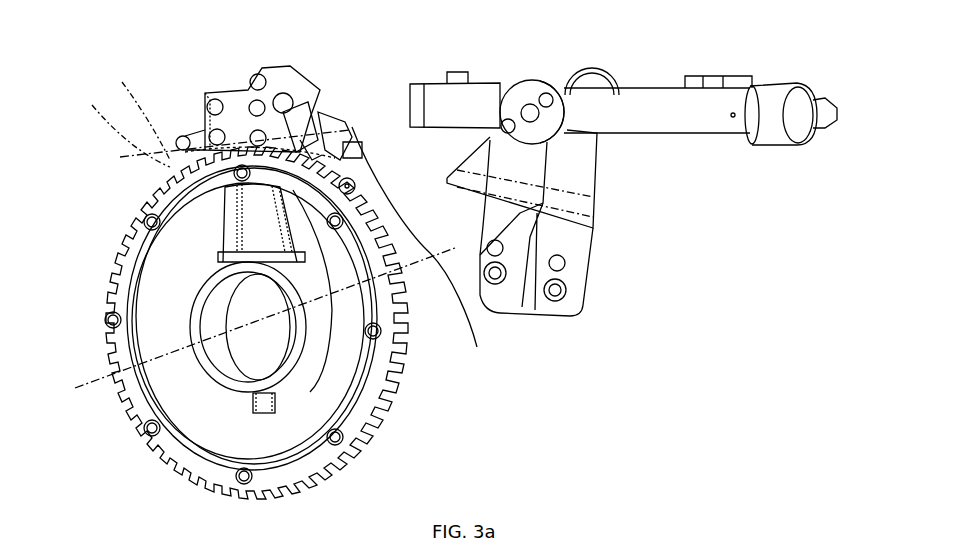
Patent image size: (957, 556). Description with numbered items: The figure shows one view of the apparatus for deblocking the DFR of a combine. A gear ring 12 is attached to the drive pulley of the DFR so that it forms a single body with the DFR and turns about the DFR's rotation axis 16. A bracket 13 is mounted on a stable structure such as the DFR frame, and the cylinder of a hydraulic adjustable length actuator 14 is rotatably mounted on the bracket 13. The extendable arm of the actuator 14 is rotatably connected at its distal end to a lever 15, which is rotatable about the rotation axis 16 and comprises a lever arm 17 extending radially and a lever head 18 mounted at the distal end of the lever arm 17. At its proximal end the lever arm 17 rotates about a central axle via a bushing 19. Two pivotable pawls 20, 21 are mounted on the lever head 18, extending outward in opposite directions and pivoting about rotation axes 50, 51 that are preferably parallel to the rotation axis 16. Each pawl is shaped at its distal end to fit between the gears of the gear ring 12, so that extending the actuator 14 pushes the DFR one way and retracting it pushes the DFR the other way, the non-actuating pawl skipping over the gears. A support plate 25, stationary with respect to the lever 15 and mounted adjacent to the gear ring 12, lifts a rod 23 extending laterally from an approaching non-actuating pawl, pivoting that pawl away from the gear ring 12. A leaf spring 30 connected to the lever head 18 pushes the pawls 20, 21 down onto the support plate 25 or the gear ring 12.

The gear ring 12 is at (372, 393).
The bracket 13 is at (560, 237).
The hydraulic adjustable length actuator 14 is at (620, 115).
The lever 15 is at (228, 212).
The rotation axis 16 is at (85, 388).
The lever arm 17 is at (260, 217).
The lever head 18 is at (240, 117).
The bushing 19 is at (230, 362).
The pivotable pawl 20 is at (192, 134).
The pivotable pawl 21 is at (302, 150).
The rod 23 is at (352, 152).
The support plate 25 is at (425, 248).
The leaf spring 30 is at (340, 128).
The rotation axis 50 is at (139, 111).
The rotation axis 51 is at (121, 126).